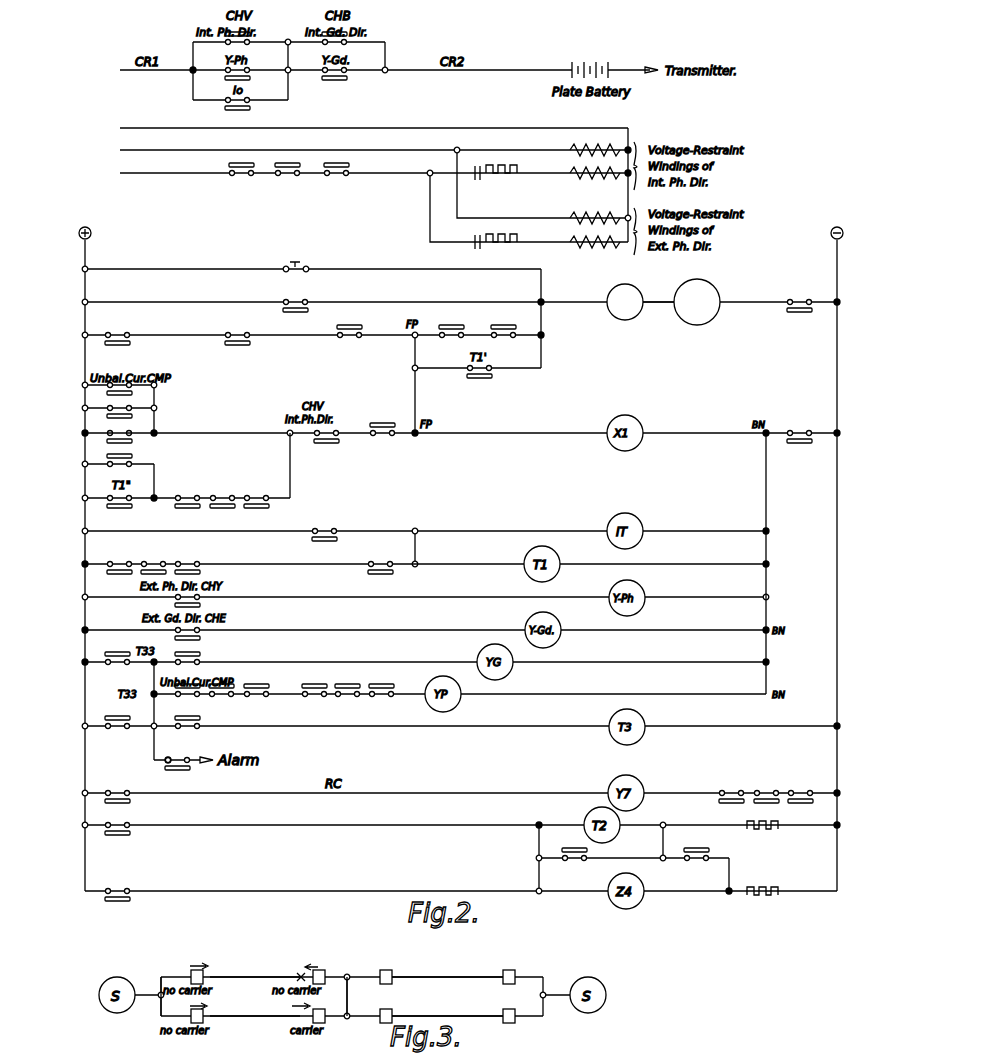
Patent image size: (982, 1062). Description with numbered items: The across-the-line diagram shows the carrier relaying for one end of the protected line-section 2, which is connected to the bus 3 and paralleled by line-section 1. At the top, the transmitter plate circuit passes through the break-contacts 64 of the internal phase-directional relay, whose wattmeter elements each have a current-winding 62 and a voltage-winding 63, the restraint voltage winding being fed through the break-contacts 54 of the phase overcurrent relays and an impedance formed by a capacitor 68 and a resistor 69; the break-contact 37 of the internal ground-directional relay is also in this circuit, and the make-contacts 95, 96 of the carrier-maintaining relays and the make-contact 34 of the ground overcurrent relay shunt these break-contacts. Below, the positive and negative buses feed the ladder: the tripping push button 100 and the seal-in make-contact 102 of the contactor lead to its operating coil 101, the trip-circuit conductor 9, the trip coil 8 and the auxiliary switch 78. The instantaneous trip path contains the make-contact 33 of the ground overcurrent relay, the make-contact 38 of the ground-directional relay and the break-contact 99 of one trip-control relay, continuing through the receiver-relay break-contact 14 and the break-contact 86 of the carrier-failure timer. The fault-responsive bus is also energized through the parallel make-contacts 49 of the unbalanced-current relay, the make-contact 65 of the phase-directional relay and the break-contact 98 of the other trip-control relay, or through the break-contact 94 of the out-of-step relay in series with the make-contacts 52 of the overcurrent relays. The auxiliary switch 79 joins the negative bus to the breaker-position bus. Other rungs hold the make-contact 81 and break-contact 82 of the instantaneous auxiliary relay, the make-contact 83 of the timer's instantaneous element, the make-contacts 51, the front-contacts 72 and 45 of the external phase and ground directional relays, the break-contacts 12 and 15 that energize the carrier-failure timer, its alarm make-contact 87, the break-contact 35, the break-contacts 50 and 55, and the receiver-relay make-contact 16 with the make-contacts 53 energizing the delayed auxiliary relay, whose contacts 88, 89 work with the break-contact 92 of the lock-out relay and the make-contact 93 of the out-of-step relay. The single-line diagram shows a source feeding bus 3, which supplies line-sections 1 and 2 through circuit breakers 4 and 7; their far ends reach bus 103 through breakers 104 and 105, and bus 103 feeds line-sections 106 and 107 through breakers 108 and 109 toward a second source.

In FIG. 2, the line-section 1 is at (365, 151).
In FIG. 3, the line-section 1 is at (258, 974).
In FIG. 2, the line-section 2 is at (364, 174).
In FIG. 3, the line-section 2 is at (260, 1026).
In FIG. 2, the bus 3 is at (364, 129).
In FIG. 3, the bus 3 is at (149, 991).
In FIG. 2, the break-contacts of internal phase directional relay CHV 64 is at (247, 44).
In FIG. 2, the break-contact of ground directional element CHB 37 is at (344, 44).
In FIG. 2, the make-contact of auxiliary carrier-maintaining relay Y-Ph 95 is at (247, 72).
In FIG. 2, the make-contact of auxiliary carrier-maintaining relay Y-Gd 96 is at (344, 72).
In FIG. 2, the make-contact of ground overcurrent relay Io 34 is at (247, 102).
In FIG. 2, the break-contacts of phase overcurrent relays 54 is at (240, 176).
In FIG. 2, the current-winding 62 is at (602, 142).
In FIG. 2, the voltage-winding 63 is at (590, 180).
In FIG. 2, the capacitor 68 is at (478, 181).
In FIG. 2, the resistor 69 is at (510, 180).
In FIG. 2, the tripping push button 100 is at (306, 266).
In FIG. 2, the make-contact of contactor CS 102 is at (305, 300).
In FIG. 2, the operating coil of contactor CS 101 is at (611, 314).
In FIG. 2, the trip-circuit conductor 9 is at (655, 300).
In FIG. 2, the trip coil 8 is at (714, 287).
In FIG. 2, the auxiliary switch 78 is at (802, 312).
In FIG. 2, the make-contact of ground overcurrent relay Io 33 is at (126, 333).
In FIG. 2, the make-contact of ground directional element CHB 38 is at (247, 337).
In FIG. 2, the break-contact of auxiliary trip-control relay YG 99 is at (352, 337).
In FIG. 2, the break-contact of receiver relay RR 14 is at (452, 337).
In FIG. 2, the break-contact of carrier-failure timer T3 86 is at (506, 337).
In FIG. 2, the make-contacts of unbalanced-current relay CMP 49 is at (129, 386).
In FIG. 2, the make-contacts of internal phase directional relay CHV 65 is at (336, 435).
In FIG. 2, the break-contact of auxiliary trip-control relay YP 98 is at (381, 436).
In FIG. 2, the auxiliary switch 79 is at (801, 443).
In FIG. 2, the break-contact of out-of-step auxiliary relay Z4 94 is at (134, 462).
In FIG. 2, the make-contacts of phase overcurrent relays 52 is at (266, 500).
In FIG. 2, the make-contact of auxiliary relay X1 81 is at (334, 529).
In FIG. 2, the make-contact of auxiliary relay IT 83 is at (390, 566).
In FIG. 2, the make-contacts of phase overcurrent relays 51 is at (197, 562).
In FIG. 2, the front-contacts of external phase directional relay CHY 72 is at (178, 599).
In FIG. 2, the make-contact of external ground directional relay CHE 45 is at (197, 632).
In FIG. 2, the back-contacts of transmitter supervisory relay TS 12 is at (110, 666).
In FIG. 2, the break-contact of ground overcurrent relay Io 35 is at (198, 660).
In FIG. 2, the break-contacts of unbalanced-current relay CMP 50 is at (190, 697).
In FIG. 2, the break-contacts of phase overcurrent relays 55 is at (314, 697).
In FIG. 2, the break-contact of receiver relay RR 15 is at (112, 729).
In FIG. 2, the break-contact of auxiliary relay X1 82 is at (197, 729).
In FIG. 2, the make-contact of carrier-failure timer T3 87 is at (166, 770).
In FIG. 2, the make-contact of receiver relay RR 16 is at (127, 795).
In FIG. 2, the make-contact of auxiliary relay Y7 88 is at (127, 827).
In FIG. 2, the make-contacts of phase overcurrent relays 53 is at (740, 804).
In FIG. 2, the break-contact of auxiliary relay Y7 89 is at (575, 861).
In FIG. 2, the break-contact of out-of-step time lock-out relay T2 92 is at (697, 861).
In FIG. 2, the make-contact of out-of-step auxiliary relay Z4 93 is at (125, 898).
In FIG. 3, the circuit breaker 4 is at (182, 975).
In FIG. 3, the circuit breaker 7 is at (203, 1014).
In FIG. 3, the circuit breaker 104 is at (330, 964).
In FIG. 3, the circuit breaker 105 is at (312, 1013).
In FIG. 3, the bus 103 is at (349, 996).
In FIG. 3, the breaker 108 is at (389, 972).
In FIG. 3, the breaker 109 is at (389, 1010).
In FIG. 3, the line-section 106 is at (437, 976).
In FIG. 3, the line-section 107 is at (460, 1015).